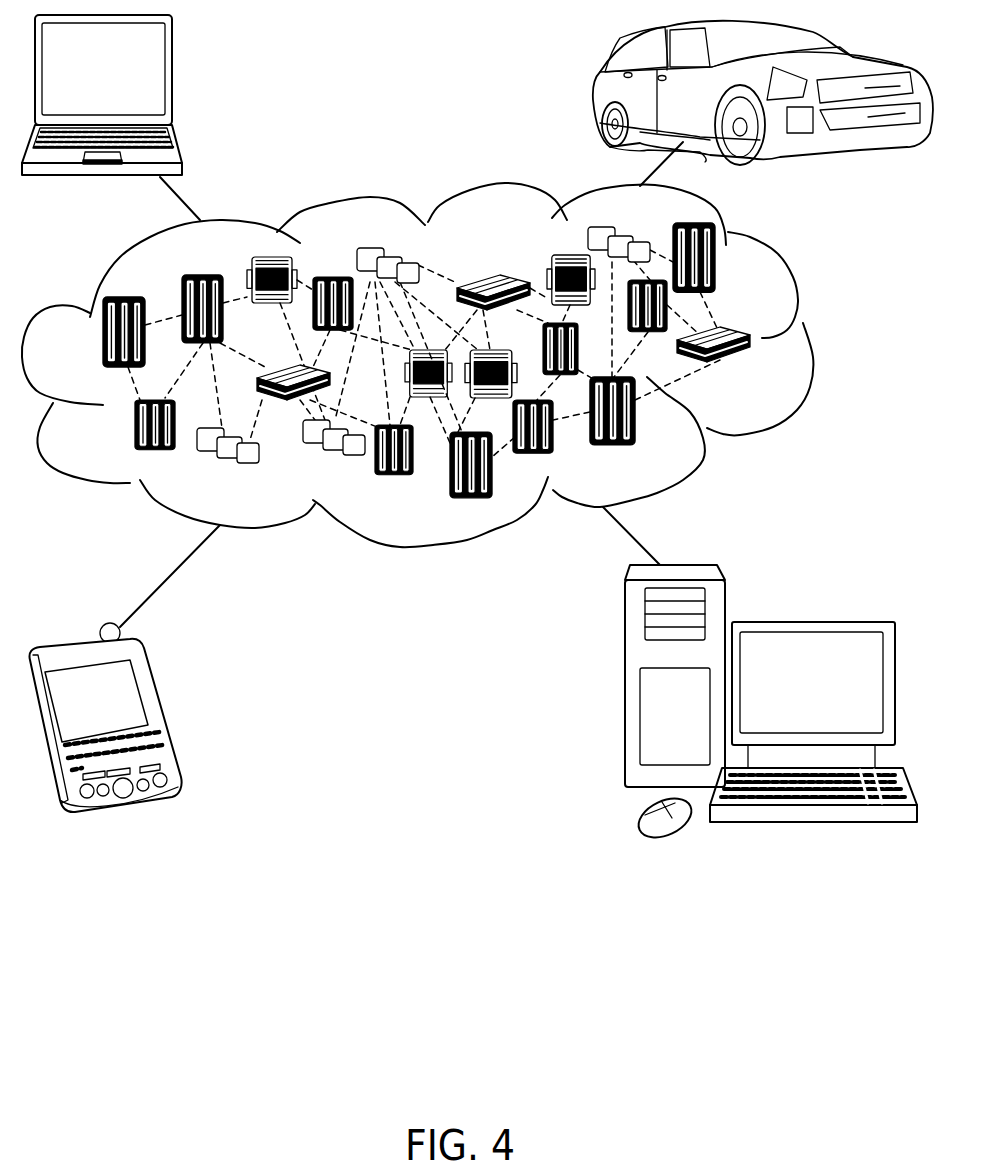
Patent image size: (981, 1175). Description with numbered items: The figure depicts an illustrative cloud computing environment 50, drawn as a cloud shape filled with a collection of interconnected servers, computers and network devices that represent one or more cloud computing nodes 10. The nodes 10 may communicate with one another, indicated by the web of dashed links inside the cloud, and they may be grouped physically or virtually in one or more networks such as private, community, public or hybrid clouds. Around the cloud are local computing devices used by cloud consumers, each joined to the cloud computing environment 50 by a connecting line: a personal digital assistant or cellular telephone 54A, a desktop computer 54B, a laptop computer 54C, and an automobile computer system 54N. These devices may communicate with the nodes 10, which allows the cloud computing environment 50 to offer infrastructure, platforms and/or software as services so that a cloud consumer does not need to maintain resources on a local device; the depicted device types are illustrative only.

The cloud computing nodes 10 is at (445, 365).
The cloud computing environment 50 is at (808, 343).
The personal digital assistant (PDA) or cellular telephone 54A is at (160, 710).
The desktop computer 54B is at (810, 622).
The laptop computer 54C is at (172, 72).
The automobile computer system 54N is at (597, 93).